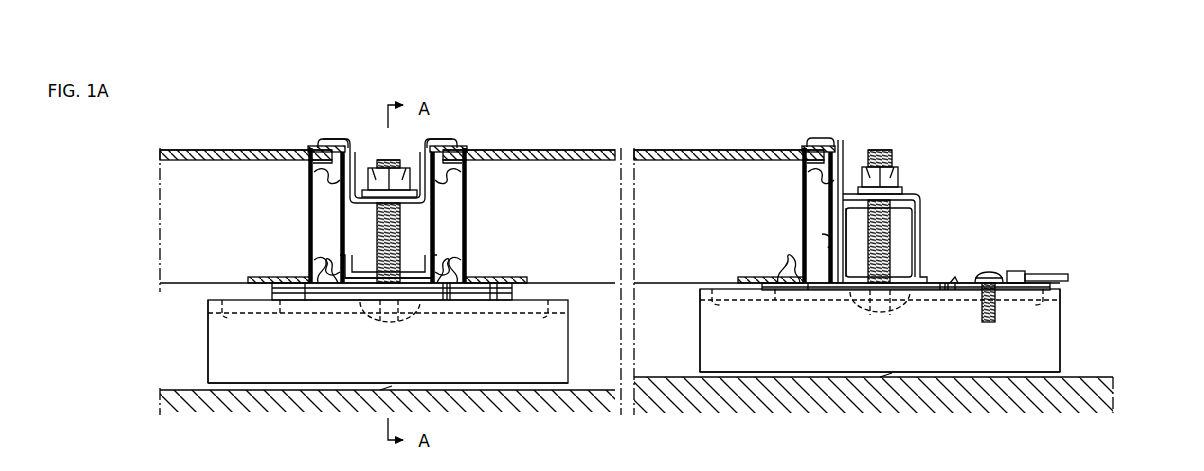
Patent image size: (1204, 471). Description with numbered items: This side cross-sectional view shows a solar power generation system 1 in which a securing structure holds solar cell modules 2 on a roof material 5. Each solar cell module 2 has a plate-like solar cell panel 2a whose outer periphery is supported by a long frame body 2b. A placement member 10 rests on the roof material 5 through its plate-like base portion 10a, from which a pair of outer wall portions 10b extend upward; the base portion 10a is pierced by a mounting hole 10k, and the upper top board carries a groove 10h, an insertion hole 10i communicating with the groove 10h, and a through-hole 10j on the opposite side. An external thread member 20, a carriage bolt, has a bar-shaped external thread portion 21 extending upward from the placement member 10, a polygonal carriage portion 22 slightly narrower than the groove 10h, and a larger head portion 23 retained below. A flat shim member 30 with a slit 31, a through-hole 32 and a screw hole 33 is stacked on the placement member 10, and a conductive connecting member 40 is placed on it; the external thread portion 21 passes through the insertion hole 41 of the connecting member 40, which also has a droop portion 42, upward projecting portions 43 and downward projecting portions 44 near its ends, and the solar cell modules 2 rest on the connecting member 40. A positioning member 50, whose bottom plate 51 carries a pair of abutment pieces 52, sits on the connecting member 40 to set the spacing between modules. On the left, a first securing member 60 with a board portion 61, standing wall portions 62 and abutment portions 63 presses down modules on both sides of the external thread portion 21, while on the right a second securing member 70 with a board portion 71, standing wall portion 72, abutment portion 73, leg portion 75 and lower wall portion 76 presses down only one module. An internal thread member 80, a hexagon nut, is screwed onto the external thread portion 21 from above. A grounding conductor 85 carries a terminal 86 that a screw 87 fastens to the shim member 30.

The solar power generation system 1 is at (1010, 140).
The solar cell module 2 is at (232, 148).
The solar cell panel 2a is at (182, 158).
The frame body 2b is at (308, 205).
The roof material 5 is at (182, 392).
The placement member 10 is at (574, 348).
The base portion 10a is at (226, 391).
The outer wall portion 10b is at (225, 352).
The groove 10h is at (281, 315).
The insertion hole 10i is at (550, 318).
The through-hole 10j is at (226, 314).
The mounting hole 10k is at (385, 394).
The external thread member 20 is at (381, 160).
The external thread portion 21 is at (828, 225).
The carriage portion 22 is at (384, 305).
The head portion 23 is at (383, 322).
The shim member 30 is at (265, 291).
The slit 31 is at (395, 290).
The through-hole 32 is at (449, 305).
The screw hole 33 is at (492, 302).
The connecting member 40 is at (483, 280).
The insertion hole 41 is at (870, 268).
The droop portion 42 is at (447, 303).
The upward projecting portion 43 is at (308, 278).
The downward projecting portion 44 is at (307, 285).
The positioning member 50 is at (352, 290).
The bottom plate 51 is at (364, 276).
The abutment piece 52 is at (342, 263).
The first securing member 60 is at (464, 133).
The board portion 61 is at (340, 219).
The standing wall portion 62 is at (350, 178).
The abutment portion 63 is at (332, 141).
The second securing member 70 is at (932, 204).
The board portion 71 is at (818, 184).
The standing wall portion 72 is at (843, 166).
The abutment portion 73 is at (823, 140).
The leg portion 75 is at (918, 230).
The lower wall portion 76 is at (832, 238).
The internal thread member 80 is at (400, 177).
The grounding conductor 85 is at (1046, 273).
The terminal 86 is at (1014, 270).
The screw 87 is at (995, 270).